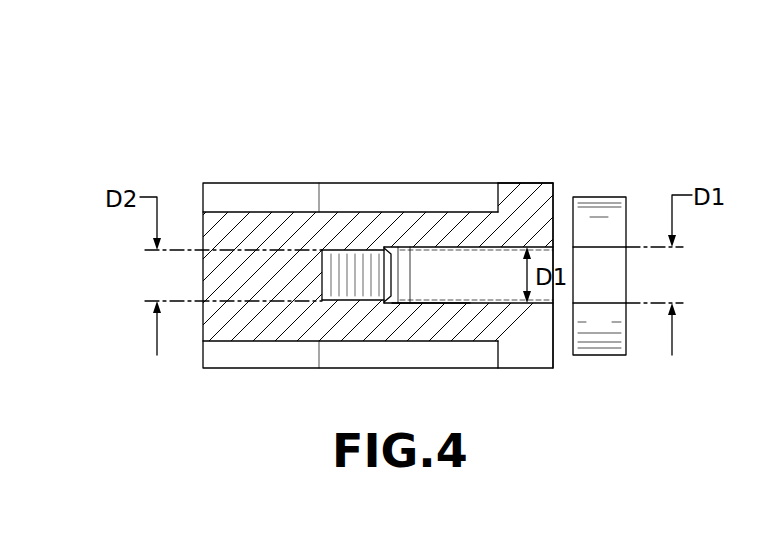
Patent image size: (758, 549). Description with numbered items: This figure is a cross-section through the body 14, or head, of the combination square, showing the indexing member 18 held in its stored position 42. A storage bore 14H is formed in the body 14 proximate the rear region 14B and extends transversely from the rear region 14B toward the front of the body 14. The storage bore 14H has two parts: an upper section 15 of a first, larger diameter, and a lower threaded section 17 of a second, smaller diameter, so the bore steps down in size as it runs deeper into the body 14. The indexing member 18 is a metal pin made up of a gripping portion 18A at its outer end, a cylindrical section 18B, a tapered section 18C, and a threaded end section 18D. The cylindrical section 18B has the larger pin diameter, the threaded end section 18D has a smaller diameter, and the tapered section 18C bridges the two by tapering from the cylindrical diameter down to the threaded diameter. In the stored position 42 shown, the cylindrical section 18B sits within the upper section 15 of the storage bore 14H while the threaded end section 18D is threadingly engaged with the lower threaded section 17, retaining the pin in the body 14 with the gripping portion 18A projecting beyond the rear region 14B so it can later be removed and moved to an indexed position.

The body 14 is at (258, 183).
The rear region 14B is at (568, 185).
The storage bore 14H is at (468, 295).
The upper section 15 is at (448, 303).
The lower threaded section 17 is at (365, 302).
The indexing member 18 is at (604, 358).
The gripping portion 18A is at (607, 278).
The cylindrical section 18B is at (460, 267).
The tapered section 18C is at (393, 247).
The threaded end section 18D is at (362, 258).
The stored position 42 is at (515, 168).